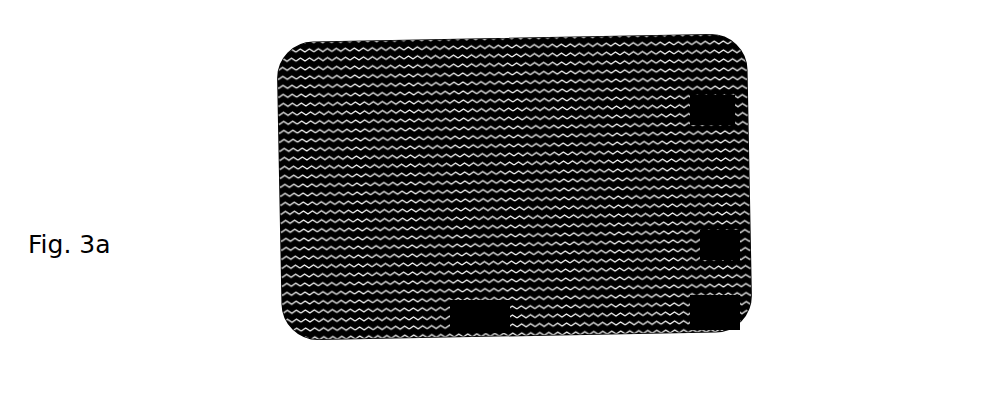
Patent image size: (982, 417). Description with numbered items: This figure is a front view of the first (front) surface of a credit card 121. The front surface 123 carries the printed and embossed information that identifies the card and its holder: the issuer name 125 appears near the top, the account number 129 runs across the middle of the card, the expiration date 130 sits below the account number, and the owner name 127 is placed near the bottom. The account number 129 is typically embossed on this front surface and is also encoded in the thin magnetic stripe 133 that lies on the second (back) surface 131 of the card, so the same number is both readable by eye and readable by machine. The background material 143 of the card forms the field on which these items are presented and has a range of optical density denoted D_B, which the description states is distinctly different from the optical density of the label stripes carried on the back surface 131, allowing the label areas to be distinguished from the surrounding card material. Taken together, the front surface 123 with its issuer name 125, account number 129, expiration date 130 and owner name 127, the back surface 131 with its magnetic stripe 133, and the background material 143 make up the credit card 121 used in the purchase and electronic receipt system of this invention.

The credit card 121 is at (236, 143).
The first (front) surface 123 is at (703, 112).
The issuer name 125 is at (328, 96).
The owner name 127 is at (388, 337).
The account number 129 is at (712, 178).
The expiration date 130 is at (648, 232).
The second (back) surface 131 is at (759, 356).
The magnetic stripe 133 is at (480, 358).
The background material 143 is at (725, 245).